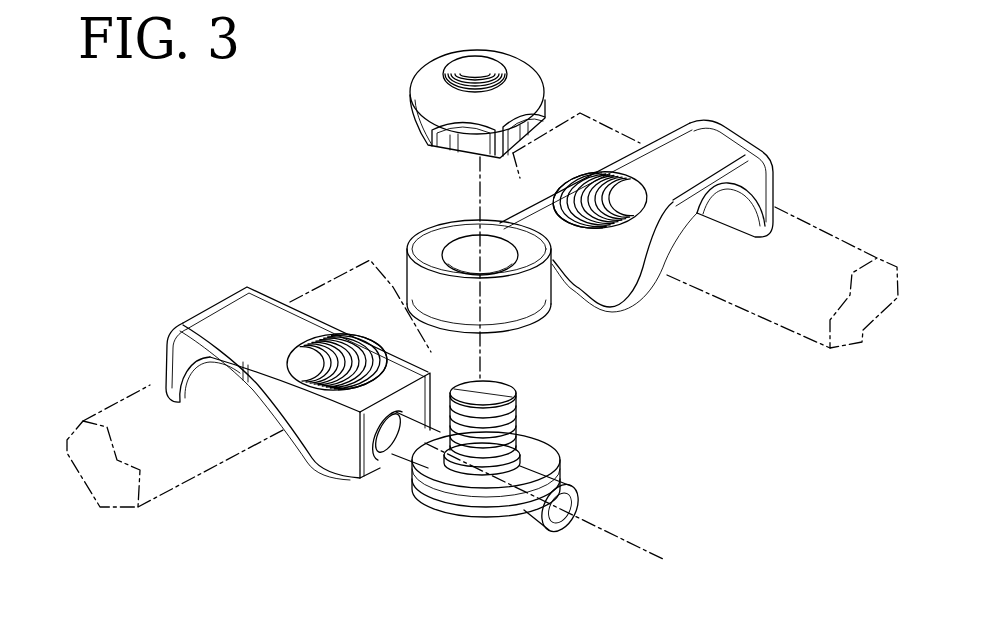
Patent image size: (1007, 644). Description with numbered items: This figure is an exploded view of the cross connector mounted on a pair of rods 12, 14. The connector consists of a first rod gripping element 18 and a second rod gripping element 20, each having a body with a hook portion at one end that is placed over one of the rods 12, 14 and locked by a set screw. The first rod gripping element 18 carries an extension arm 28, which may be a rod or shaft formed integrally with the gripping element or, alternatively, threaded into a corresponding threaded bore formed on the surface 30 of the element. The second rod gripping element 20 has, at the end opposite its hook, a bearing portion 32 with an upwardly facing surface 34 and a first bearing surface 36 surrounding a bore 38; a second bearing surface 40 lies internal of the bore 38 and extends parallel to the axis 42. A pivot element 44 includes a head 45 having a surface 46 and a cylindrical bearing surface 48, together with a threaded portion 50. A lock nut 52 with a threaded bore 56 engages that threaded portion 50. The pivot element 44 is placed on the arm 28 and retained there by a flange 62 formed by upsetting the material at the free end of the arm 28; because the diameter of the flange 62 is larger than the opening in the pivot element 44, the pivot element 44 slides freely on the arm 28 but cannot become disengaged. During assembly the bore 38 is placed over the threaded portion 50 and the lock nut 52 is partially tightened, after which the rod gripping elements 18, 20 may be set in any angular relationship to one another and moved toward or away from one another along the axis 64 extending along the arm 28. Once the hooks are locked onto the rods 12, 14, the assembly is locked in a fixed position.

The rod 12 is at (162, 462).
The rod 14 is at (827, 247).
The first rod gripping element 18 is at (230, 312).
The second rod gripping element 20 is at (700, 138).
The extension arm 28 is at (396, 450).
The surface 30 is at (372, 436).
The bearing portion 32 is at (555, 284).
The upwardly facing surface 34 is at (430, 242).
The first bearing surface 36 is at (522, 322).
The bore 38 is at (470, 280).
The second bearing surface 40 is at (503, 254).
The axis 42 is at (476, 190).
The pivot element 44 is at (480, 512).
The head 45 is at (464, 514).
The surface 46 is at (547, 458).
The cylindrical bearing surface 48 is at (458, 465).
The threaded portion 50 is at (520, 420).
The lock nut 52 is at (523, 90).
The threaded bore 56 is at (483, 63).
The flange 62 is at (580, 497).
The axis 64 is at (652, 548).